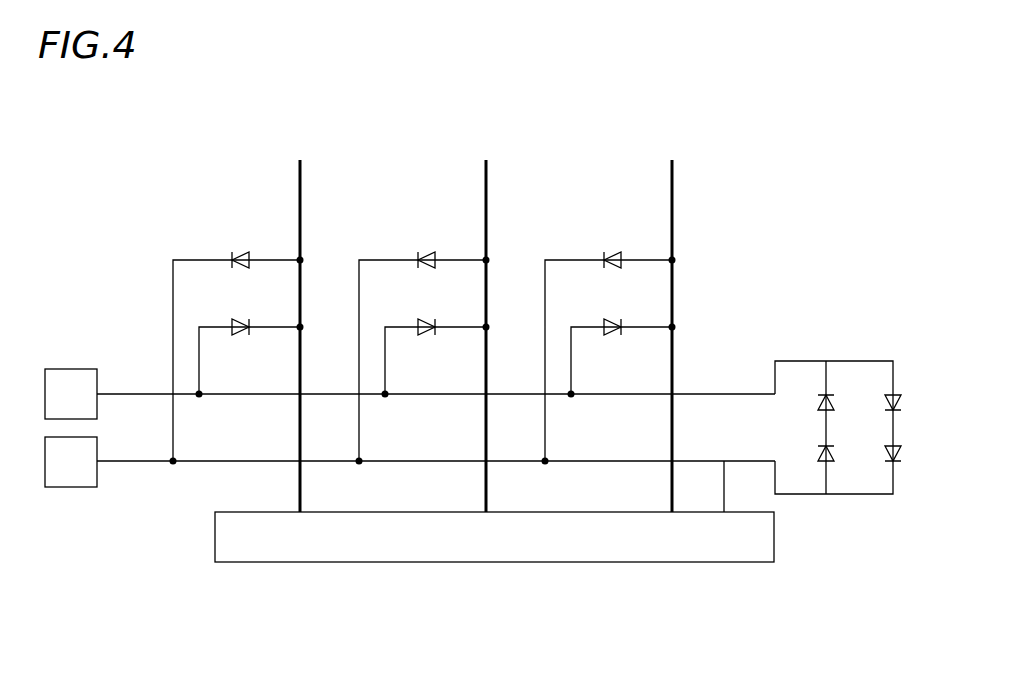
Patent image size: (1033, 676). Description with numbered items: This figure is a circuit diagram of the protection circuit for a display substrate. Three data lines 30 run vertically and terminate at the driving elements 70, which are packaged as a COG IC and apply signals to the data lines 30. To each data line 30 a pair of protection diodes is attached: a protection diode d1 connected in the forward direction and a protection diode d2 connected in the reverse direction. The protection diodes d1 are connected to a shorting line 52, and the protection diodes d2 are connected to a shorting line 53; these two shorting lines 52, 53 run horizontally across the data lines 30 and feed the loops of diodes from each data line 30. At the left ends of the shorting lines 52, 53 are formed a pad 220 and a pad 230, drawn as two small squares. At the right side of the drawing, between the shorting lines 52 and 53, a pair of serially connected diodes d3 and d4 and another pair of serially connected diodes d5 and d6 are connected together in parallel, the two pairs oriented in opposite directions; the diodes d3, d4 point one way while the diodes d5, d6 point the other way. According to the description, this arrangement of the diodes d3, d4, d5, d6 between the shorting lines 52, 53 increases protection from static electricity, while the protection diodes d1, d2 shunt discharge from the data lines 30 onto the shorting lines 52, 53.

The data line 30 is at (300, 184).
The pad 220 is at (71, 369).
The pad 230 is at (71, 487).
The shorting line 52 is at (723, 393).
The shorting line 53 is at (724, 562).
The driving element 70 is at (451, 562).
The protection diode d1 is at (329, 342).
The protection diode d2 is at (342, 342).
The diode d3 is at (809, 427).
The diode d4 is at (809, 455).
The diode d5 is at (877, 405).
The diode d6 is at (877, 455).